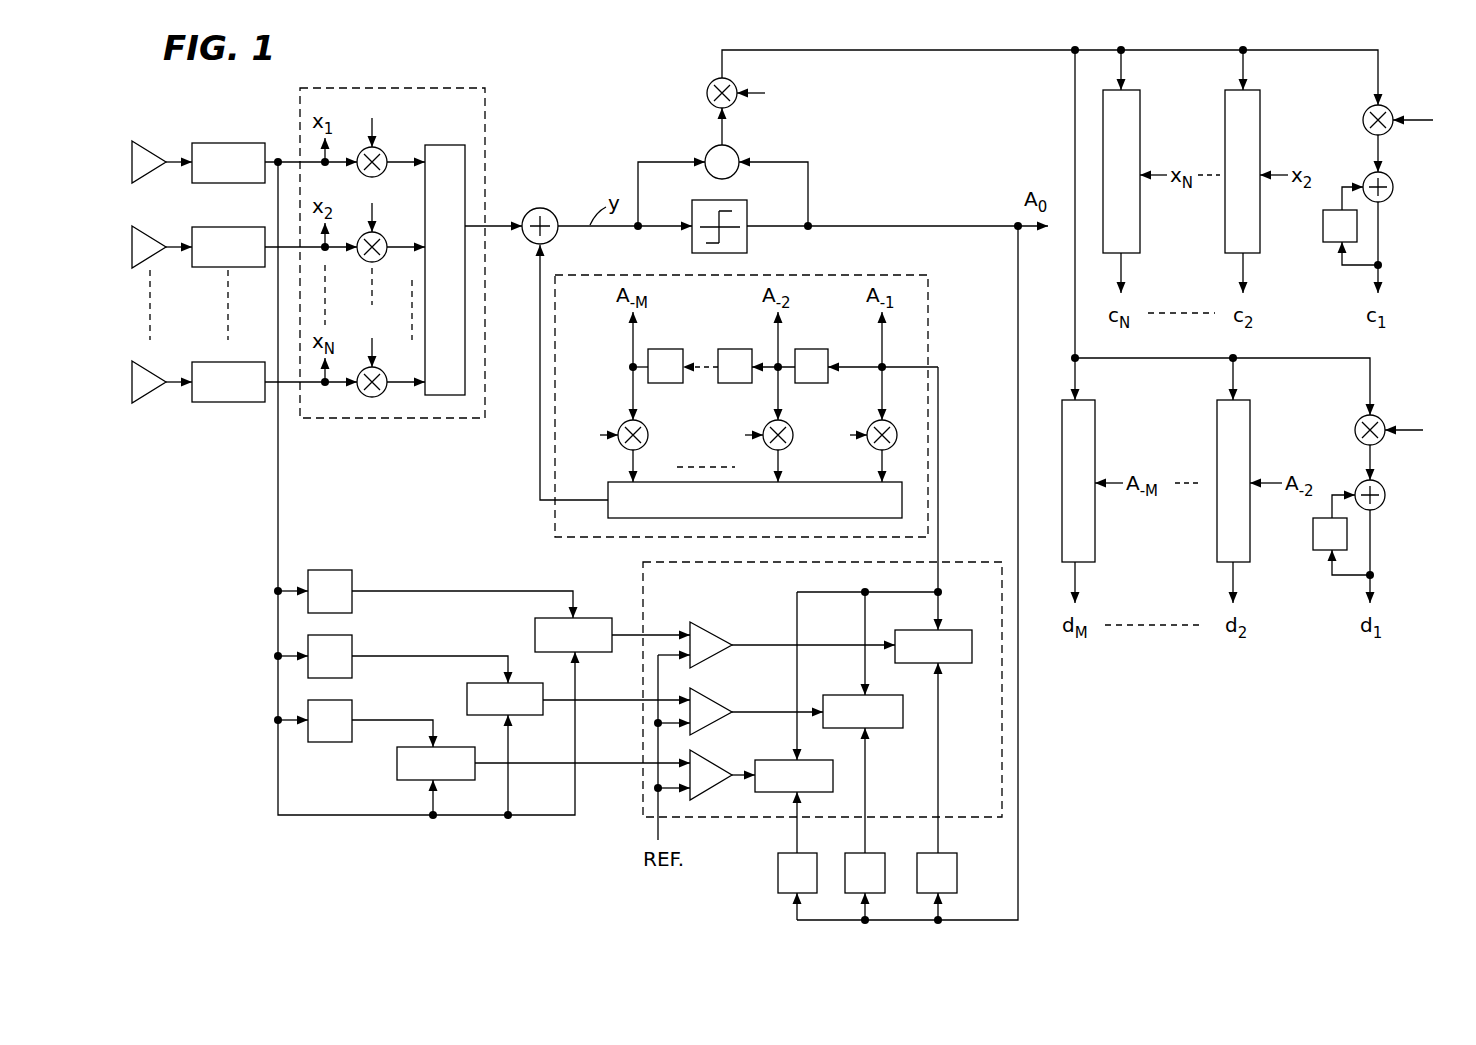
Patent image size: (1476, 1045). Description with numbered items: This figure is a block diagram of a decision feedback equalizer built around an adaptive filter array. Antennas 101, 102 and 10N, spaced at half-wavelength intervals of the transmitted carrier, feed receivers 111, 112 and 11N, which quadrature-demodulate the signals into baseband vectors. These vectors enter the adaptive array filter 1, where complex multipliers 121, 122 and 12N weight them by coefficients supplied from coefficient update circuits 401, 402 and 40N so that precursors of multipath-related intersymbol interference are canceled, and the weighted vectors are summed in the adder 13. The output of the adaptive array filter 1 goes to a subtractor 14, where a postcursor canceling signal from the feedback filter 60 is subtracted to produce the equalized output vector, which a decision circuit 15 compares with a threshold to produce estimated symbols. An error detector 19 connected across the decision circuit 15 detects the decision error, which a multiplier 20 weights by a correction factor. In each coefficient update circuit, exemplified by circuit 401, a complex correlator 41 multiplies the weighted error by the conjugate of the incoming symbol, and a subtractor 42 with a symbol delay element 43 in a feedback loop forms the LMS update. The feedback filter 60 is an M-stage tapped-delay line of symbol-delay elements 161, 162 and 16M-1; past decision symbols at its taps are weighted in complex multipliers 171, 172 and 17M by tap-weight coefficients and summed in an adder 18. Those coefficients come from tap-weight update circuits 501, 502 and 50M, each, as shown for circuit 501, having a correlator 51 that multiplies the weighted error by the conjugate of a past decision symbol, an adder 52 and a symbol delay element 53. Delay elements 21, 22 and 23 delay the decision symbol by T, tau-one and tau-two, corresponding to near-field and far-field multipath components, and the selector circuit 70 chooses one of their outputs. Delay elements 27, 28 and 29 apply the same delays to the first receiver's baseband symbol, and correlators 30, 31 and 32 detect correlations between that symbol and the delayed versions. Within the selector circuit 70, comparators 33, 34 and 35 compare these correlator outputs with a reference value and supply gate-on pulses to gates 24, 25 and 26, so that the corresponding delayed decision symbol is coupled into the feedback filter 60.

The adaptive array filter 1 is at (388, 88).
The antenna 101 is at (143, 143).
The antenna 102 is at (143, 228).
The antenna 10N is at (143, 362).
The receiver 111 is at (206, 143).
The receiver 112 is at (206, 227).
The receiver 11N is at (206, 362).
The complex multiplier 121 is at (384, 150).
The complex multiplier 122 is at (384, 235).
The complex multiplier 12N is at (384, 370).
The adder 13 is at (438, 145).
The subtractor 14 is at (535, 210).
The decision circuit 15 is at (747, 215).
The symbol-delay element 16M-1 is at (670, 349).
The symbol-delay element 162 is at (737, 349).
The symbol-delay element 161 is at (813, 349).
The complex multiplier 17M is at (652, 416).
The complex multiplier 172 is at (797, 416).
The complex multiplier 171 is at (901, 416).
The adder 18 is at (608, 491).
The error detector 19 is at (705, 152).
The multiplier 20 is at (709, 84).
The delay element 21 is at (805, 853).
The delay element 22 is at (873, 853).
The delay element 23 is at (945, 853).
The gate 24 is at (820, 760).
The gate 25 is at (887, 695).
The gate 26 is at (960, 630).
The delay element 27 is at (340, 701).
The delay element 28 is at (340, 636).
The delay element 29 is at (340, 571).
The correlator 30 is at (455, 747).
The correlator 31 is at (525, 683).
The correlator 32 is at (592, 618).
The comparator 33 is at (720, 757).
The comparator 34 is at (720, 694).
The comparator 35 is at (720, 628).
The coefficient update circuit 40N is at (1140, 128).
The coefficient update circuit 402 is at (1260, 128).
The coefficient update circuit 401 is at (1434, 268).
The complex correlator 41 is at (1362, 126).
The subtractor 42 is at (1393, 192).
The symbol delay element 43 is at (1323, 235).
The tap-weight update circuit 50M is at (1095, 438).
The tap-weight update circuit 502 is at (1250, 438).
The tap-weight update circuit 501 is at (1424, 576).
The correlator 51 is at (1355, 437).
The adder 52 is at (1385, 501).
The symbol delay element 53 is at (1313, 543).
The feedback filter 60 is at (904, 275).
The selector circuit 70 is at (963, 562).